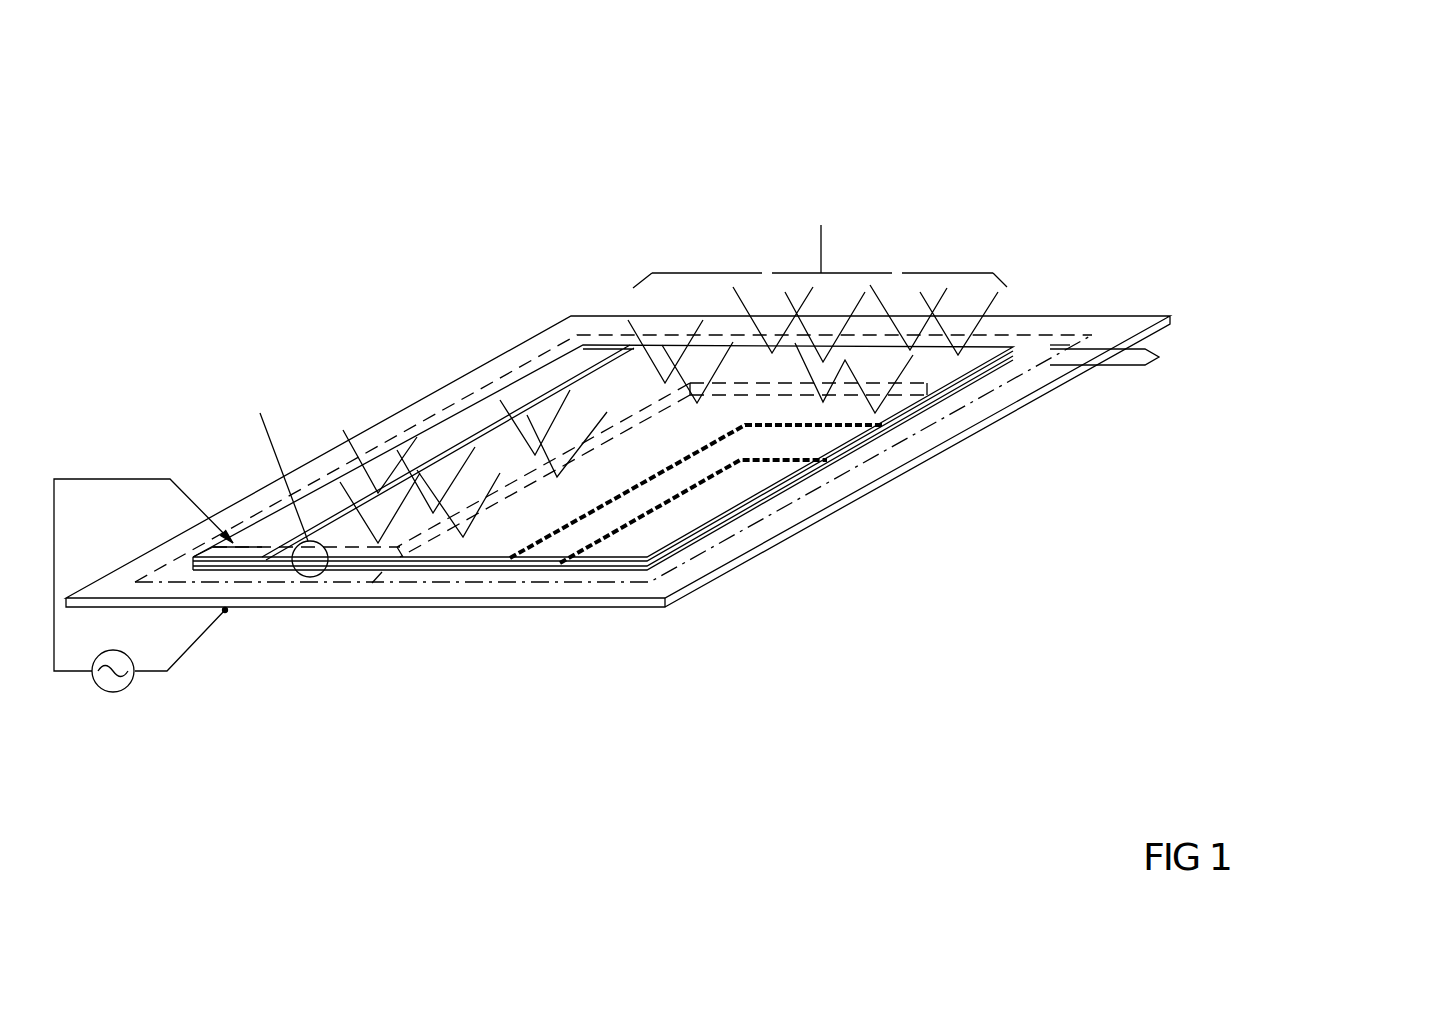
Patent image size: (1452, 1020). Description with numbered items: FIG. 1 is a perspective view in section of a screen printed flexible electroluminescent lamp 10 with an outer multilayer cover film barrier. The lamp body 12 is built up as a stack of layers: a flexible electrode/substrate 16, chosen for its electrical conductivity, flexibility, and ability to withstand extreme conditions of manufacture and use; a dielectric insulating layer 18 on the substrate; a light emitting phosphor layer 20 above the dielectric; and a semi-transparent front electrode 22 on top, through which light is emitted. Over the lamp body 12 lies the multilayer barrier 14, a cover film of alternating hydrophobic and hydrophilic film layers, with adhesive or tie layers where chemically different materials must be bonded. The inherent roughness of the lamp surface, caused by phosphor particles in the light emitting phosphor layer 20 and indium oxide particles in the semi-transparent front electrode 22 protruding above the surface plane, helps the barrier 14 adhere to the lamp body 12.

The screen printed flexible electroluminescent lamp 10 is at (729, 483).
The lamp body 12 is at (1159, 357).
The multilayer barrier 14 is at (698, 382).
The flexible electrode/substrate 16 is at (573, 600).
The dielectric insulating layer 18 is at (747, 508).
The light emitting phosphor layer 20 is at (870, 442).
The semi-transparent front electrode 22 is at (797, 423).